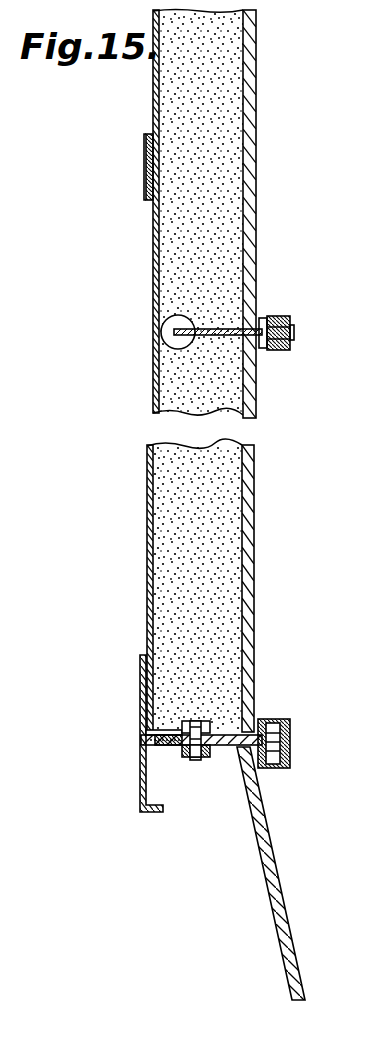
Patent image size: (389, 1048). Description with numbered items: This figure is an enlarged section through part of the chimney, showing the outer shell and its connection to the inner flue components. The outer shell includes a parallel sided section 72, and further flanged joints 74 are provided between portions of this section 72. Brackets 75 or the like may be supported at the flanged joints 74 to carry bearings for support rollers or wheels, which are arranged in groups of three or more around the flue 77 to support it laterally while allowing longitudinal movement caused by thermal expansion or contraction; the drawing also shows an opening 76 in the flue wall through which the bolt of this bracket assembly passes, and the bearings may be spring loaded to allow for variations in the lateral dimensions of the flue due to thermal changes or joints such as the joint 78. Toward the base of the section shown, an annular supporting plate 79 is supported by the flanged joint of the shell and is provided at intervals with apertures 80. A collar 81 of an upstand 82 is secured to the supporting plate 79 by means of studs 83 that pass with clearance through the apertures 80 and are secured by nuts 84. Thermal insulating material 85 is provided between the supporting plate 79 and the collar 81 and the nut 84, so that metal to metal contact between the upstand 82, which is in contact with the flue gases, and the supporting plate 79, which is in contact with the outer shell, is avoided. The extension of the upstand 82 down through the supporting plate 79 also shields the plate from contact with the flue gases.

The parallel sided section 72 is at (251, 416).
The flanged joints 74 is at (258, 318).
The brackets 75 is at (227, 336).
The opening in panel 76 is at (165, 322).
The flue 77 is at (153, 278).
The joints 78 is at (145, 155).
The annular supporting plate 79 is at (228, 750).
The apertures 80 is at (214, 737).
The collar 81 is at (173, 729).
The upstand 82 is at (142, 672).
The studs 83 is at (194, 760).
The nuts 84 is at (186, 757).
The thermal insulating material 85 is at (160, 749).